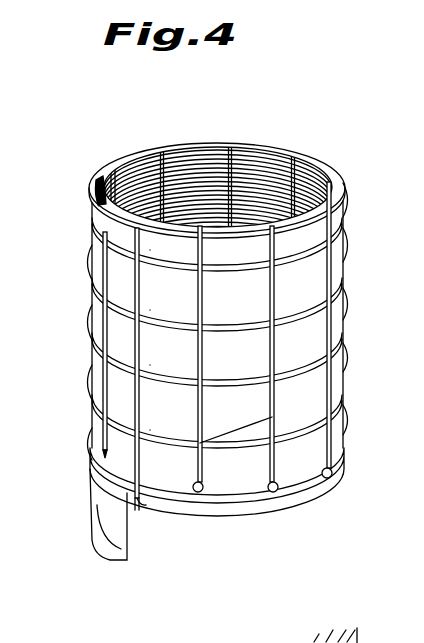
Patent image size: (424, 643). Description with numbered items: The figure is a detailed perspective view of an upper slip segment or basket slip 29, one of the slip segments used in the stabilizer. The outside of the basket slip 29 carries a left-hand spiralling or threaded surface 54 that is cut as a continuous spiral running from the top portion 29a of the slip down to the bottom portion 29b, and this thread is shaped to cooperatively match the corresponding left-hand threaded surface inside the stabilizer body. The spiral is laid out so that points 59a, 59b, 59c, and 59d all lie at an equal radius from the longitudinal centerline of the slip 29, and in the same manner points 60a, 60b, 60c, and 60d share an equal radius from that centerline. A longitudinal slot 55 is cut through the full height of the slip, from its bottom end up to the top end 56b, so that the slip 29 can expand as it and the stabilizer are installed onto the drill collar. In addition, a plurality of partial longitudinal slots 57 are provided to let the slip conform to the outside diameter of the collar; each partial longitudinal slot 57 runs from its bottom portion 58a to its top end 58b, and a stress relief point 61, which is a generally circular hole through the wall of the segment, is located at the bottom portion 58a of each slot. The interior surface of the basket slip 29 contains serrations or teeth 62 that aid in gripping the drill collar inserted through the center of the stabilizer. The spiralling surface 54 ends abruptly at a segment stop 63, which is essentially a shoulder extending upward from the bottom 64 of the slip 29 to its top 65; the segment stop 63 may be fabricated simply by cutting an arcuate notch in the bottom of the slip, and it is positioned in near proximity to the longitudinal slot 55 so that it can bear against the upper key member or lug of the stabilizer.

The upper slip segment or basket slip 29 is at (78, 343).
The top portion of slip 29a is at (168, 142).
The bottom portion of slip 29b is at (317, 505).
The left-hand spiralling or threaded surface 54 is at (343, 245).
The longitudinal slot 55 is at (130, 380).
The top end of slip 56b is at (143, 228).
The partial longitudinal slot 57 is at (200, 417).
The bottom portion of partial longitudinal slot 58a is at (287, 486).
The top end of partial longitudinal slot 58b is at (310, 150).
The point of equal radius 59a is at (303, 278).
The point of equal radius 59b is at (303, 335).
The point of equal radius 59c is at (302, 393).
The point of equal radius 59d is at (297, 455).
The point of equal radius 60a is at (302, 313).
The point of equal radius 60b is at (300, 373).
The point of equal radius 60c is at (298, 438).
The point of equal radius 60d is at (298, 492).
The stress relief point 61 is at (330, 470).
The serrations or teeth 62 is at (255, 163).
The segment stop 63 is at (130, 543).
The bottom of slip 64 is at (125, 565).
The top of slip 65 is at (137, 510).